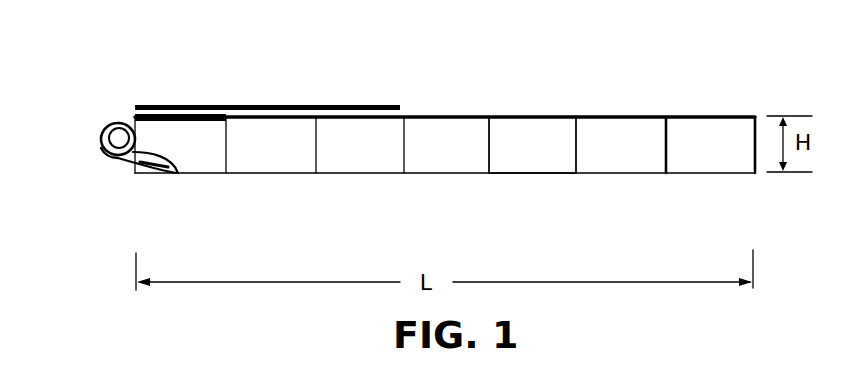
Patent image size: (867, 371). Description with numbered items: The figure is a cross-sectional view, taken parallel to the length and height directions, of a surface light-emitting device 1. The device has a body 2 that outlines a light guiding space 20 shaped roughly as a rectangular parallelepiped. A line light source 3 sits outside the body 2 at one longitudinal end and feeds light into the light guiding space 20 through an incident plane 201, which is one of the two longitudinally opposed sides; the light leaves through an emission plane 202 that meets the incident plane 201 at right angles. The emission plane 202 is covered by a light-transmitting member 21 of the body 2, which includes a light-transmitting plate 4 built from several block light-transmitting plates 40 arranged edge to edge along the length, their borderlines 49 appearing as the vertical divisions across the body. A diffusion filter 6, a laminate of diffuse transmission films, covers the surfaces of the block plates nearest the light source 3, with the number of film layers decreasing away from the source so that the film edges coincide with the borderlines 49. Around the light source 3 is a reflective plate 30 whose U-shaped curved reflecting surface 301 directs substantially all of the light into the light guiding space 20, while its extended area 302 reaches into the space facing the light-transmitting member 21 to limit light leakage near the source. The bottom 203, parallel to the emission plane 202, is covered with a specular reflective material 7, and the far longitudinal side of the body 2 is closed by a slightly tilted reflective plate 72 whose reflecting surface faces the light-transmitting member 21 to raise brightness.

The surface light-emitting device 1 is at (677, 66).
The body 2 is at (689, 138).
The light guiding space 20 is at (530, 150).
The incident plane 201 is at (172, 166).
The emission plane 202 is at (335, 118).
The bottom 203 is at (247, 173).
The light-transmitting member 21 is at (457, 115).
The light source 3 is at (132, 92).
The reflective plate 30 is at (99, 124).
The curved reflecting surface 301 is at (107, 152).
The extended area 302 is at (147, 167).
The light-transmitting plate 4 is at (548, 106).
The block light-transmitting plate 40 is at (518, 115).
The borderline 49 is at (227, 118).
The diffusion filter 6 is at (203, 105).
The specular reflective material 7 is at (362, 173).
The reflective plate 72 is at (748, 157).